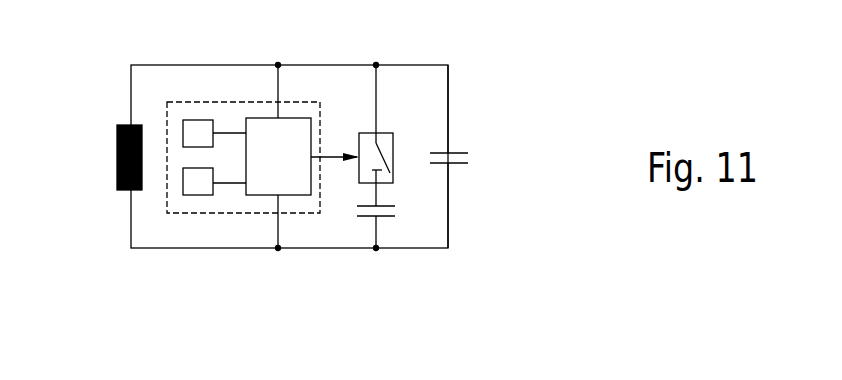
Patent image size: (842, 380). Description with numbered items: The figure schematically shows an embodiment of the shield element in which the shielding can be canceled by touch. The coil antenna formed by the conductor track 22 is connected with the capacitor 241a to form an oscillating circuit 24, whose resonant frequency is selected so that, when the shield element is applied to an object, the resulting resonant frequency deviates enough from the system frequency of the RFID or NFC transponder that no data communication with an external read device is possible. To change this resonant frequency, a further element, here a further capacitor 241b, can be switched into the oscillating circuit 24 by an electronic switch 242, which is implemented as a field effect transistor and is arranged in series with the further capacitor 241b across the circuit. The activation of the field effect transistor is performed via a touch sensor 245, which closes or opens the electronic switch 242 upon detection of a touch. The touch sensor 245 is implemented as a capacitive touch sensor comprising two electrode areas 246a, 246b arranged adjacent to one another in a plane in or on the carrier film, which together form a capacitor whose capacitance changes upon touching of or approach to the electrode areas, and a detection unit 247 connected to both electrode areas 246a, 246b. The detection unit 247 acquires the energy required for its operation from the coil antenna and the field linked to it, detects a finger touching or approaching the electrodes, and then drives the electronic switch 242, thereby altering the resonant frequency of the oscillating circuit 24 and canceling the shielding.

The oscillating circuit 24 is at (332, 272).
The conductor track 22 is at (117, 160).
The touch sensor 245 is at (238, 221).
The first electrode area 246a is at (190, 120).
The second electrode area 246b is at (197, 195).
The detection unit 247 is at (300, 167).
The electronic switch 242 is at (368, 131).
The capacitor 241a is at (457, 150).
The further capacitor 241b is at (383, 218).